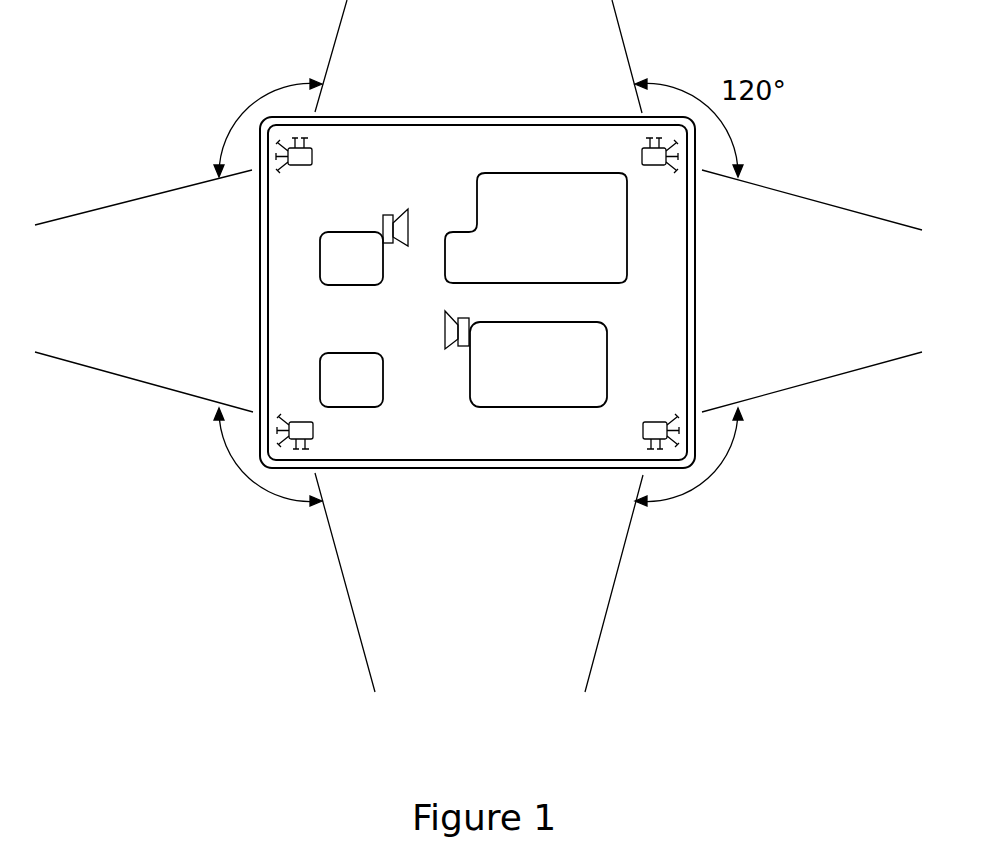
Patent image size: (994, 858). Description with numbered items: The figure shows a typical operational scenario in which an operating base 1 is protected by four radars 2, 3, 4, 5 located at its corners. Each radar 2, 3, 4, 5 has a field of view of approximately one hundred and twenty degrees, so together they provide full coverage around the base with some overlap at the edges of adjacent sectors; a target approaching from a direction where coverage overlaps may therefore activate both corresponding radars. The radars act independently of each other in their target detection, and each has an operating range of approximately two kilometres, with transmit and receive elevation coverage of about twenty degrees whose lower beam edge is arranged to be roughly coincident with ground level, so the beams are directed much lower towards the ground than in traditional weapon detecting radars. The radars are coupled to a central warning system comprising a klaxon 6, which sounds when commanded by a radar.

The operating base 1 is at (424, 117).
The radar 2 is at (312, 157).
The radar 3 is at (653, 168).
The radar 4 is at (650, 428).
The radar 5 is at (313, 431).
The klaxon 6 is at (413, 218).